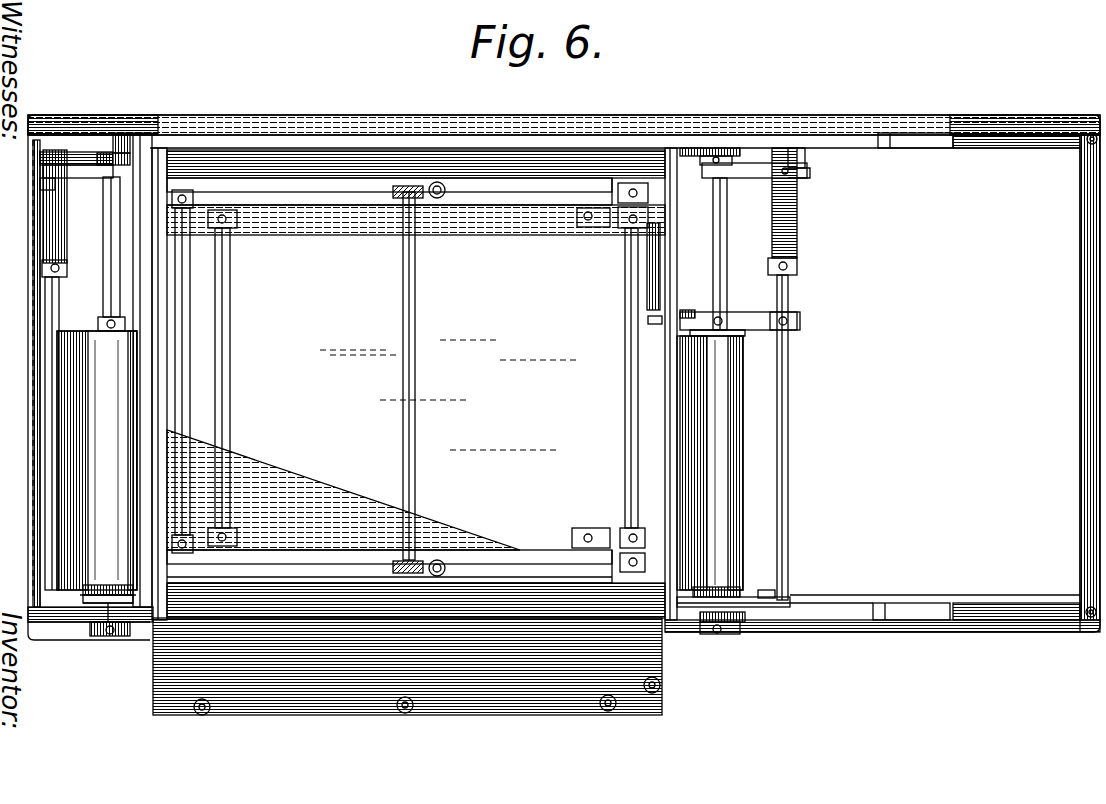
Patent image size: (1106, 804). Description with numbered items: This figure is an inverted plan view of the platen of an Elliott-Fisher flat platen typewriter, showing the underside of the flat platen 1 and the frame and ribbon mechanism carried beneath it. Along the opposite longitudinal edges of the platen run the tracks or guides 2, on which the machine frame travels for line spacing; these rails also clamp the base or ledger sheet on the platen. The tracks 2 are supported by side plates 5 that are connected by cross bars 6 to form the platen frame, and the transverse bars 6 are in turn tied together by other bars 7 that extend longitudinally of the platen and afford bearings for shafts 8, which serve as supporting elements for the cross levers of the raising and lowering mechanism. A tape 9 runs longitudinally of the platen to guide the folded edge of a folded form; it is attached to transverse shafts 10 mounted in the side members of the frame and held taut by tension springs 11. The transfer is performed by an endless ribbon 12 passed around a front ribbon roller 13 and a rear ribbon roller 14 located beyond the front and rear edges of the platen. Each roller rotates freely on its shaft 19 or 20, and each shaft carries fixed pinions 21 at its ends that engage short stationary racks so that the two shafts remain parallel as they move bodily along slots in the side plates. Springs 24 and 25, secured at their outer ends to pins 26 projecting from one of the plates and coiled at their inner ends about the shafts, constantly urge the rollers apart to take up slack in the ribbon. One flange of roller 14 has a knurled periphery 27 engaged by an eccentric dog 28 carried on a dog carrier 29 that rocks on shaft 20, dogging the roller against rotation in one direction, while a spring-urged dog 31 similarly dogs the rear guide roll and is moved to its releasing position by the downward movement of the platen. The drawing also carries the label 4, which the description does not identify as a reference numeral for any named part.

The flat platen 1 is at (416, 376).
The tracks or guides 2 is at (1000, 142).
The pivot slide 4 is at (420, 560).
The side plates 5 is at (337, 140).
The cross bars 6 is at (145, 545).
The longitudinal bars 7 is at (350, 175).
The shafts 8 is at (183, 410).
The tape 9 is at (748, 312).
The transverse shafts 10 is at (48, 403).
The tension springs 11 is at (797, 228).
The endless ribbon 12 is at (745, 480).
The ribbon roller 13 is at (90, 595).
The ribbon roller 14 is at (742, 590).
The roller shaft 19 is at (106, 298).
The roller shaft 20 is at (727, 259).
The pinions 21 is at (125, 150).
The spring 24 is at (98, 170).
The spring 25 is at (766, 172).
The pins 26 is at (40, 184).
The knurled periphery 27 is at (690, 600).
The eccentric dog 28 is at (765, 598).
The dog carrier 29 is at (720, 634).
The spring-urged dog 31 is at (648, 322).